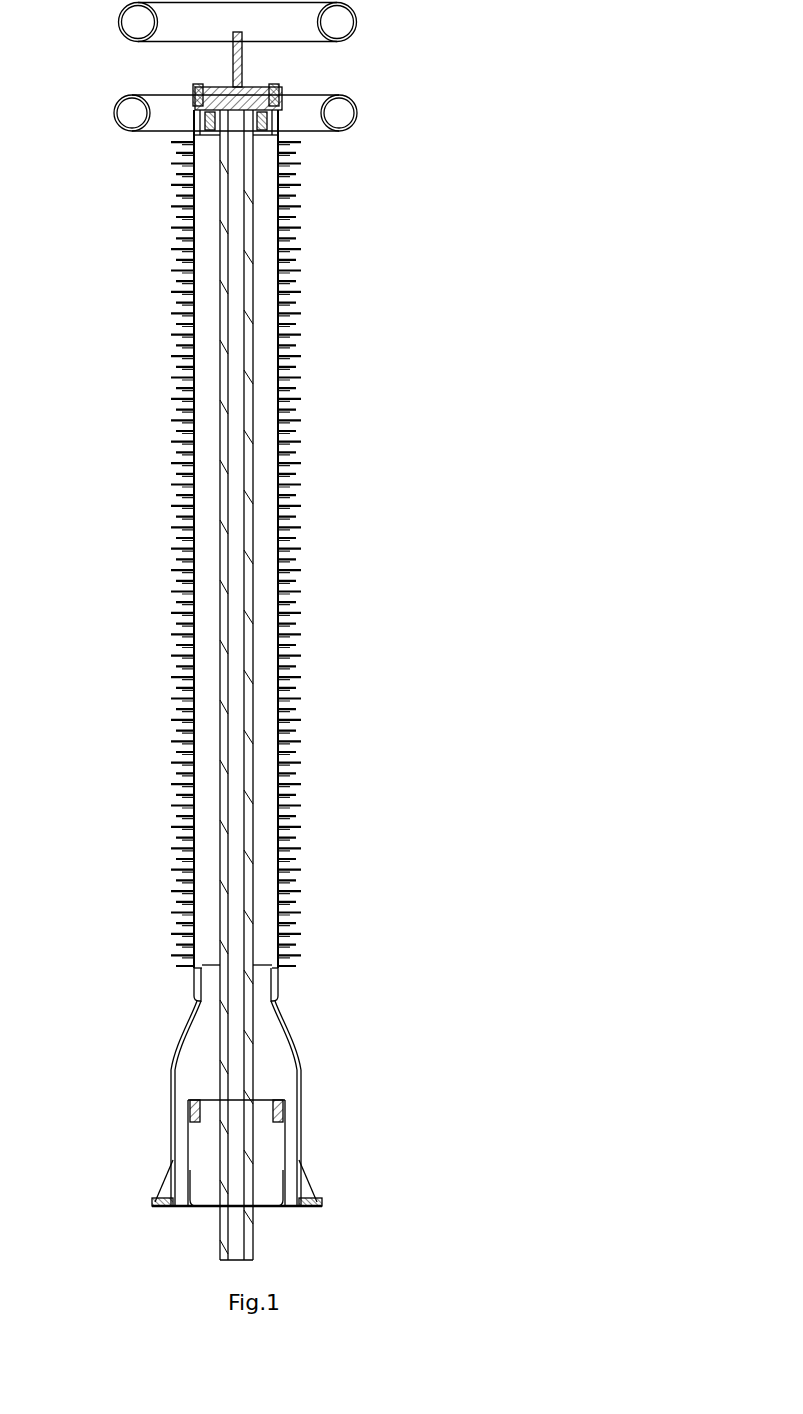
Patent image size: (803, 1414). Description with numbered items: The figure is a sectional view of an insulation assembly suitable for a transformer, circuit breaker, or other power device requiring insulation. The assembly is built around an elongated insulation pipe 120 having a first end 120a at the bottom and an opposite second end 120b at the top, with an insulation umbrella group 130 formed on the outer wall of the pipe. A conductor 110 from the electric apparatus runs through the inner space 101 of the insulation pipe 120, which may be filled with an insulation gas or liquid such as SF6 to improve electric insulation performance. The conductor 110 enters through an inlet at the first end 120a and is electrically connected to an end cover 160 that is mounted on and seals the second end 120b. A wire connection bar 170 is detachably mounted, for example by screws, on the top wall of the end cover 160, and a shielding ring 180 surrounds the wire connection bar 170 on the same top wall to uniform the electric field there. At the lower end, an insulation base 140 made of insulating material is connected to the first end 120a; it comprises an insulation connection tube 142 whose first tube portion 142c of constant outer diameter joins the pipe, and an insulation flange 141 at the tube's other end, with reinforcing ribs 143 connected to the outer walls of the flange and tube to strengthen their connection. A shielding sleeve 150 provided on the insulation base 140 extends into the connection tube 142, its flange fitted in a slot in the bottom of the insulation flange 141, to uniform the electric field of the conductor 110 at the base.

The inner space 101 is at (210, 477).
The conductor 110 is at (248, 437).
The insulation pipe 120 is at (227, 566).
The first end 120a is at (280, 982).
The second end 120b is at (194, 118).
The insulation umbrella group 130 is at (172, 417).
The insulation base 140 is at (225, 1116).
The insulation flange 141 is at (163, 1205).
The insulation connection tube 142 is at (303, 1098).
The first tube portion 142c is at (197, 1000).
The reinforcing ribs 143 is at (168, 1190).
The shielding sleeve 150 is at (192, 1173).
The end cover 160 is at (262, 88).
The wire connection bar 170 is at (237, 72).
The shielding ring 180 is at (350, 114).